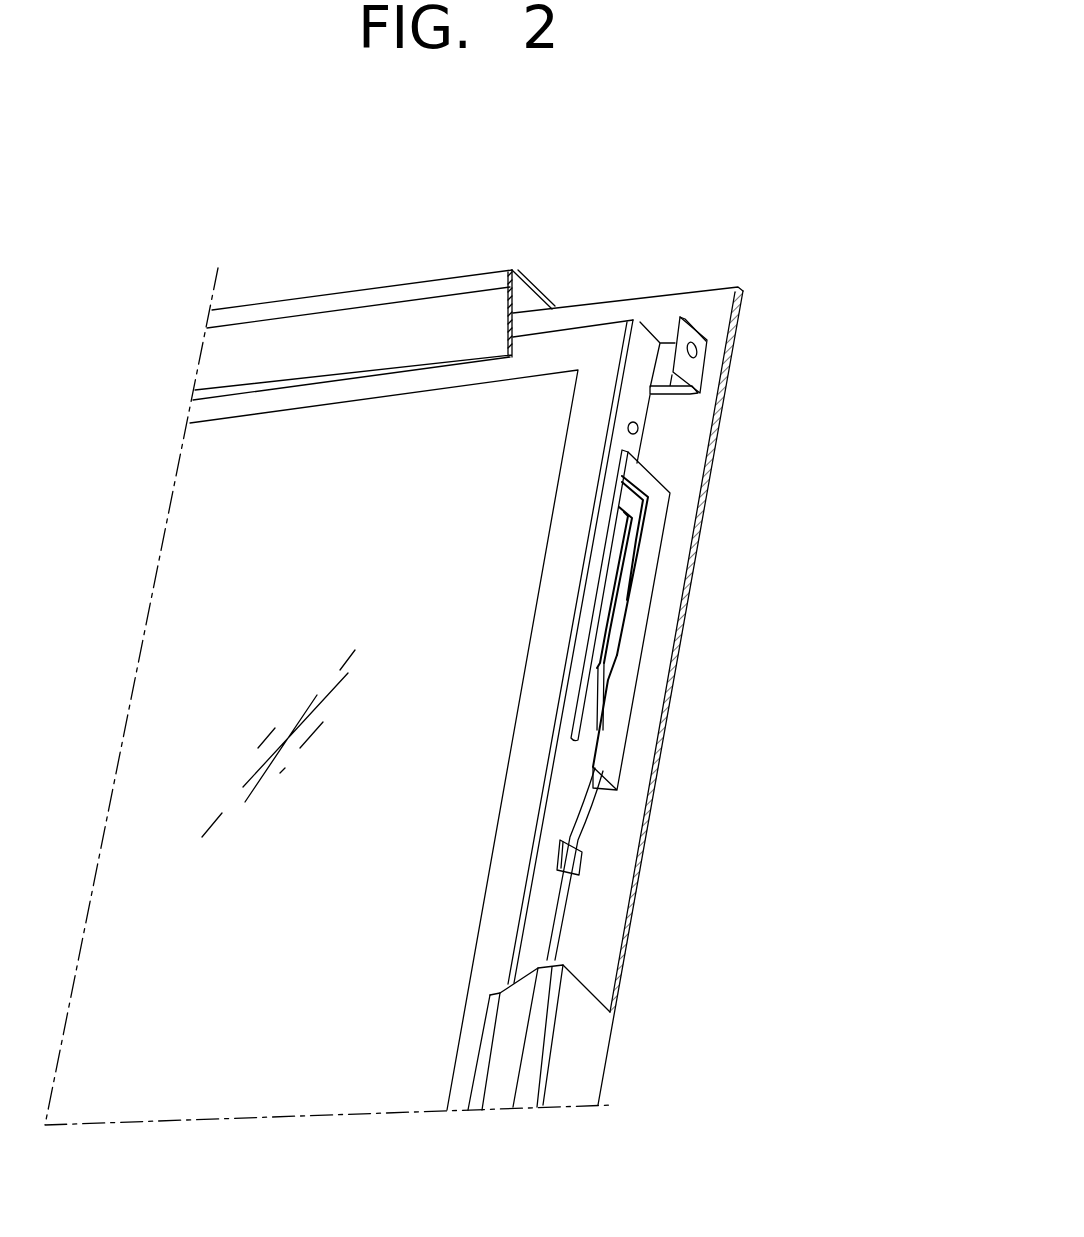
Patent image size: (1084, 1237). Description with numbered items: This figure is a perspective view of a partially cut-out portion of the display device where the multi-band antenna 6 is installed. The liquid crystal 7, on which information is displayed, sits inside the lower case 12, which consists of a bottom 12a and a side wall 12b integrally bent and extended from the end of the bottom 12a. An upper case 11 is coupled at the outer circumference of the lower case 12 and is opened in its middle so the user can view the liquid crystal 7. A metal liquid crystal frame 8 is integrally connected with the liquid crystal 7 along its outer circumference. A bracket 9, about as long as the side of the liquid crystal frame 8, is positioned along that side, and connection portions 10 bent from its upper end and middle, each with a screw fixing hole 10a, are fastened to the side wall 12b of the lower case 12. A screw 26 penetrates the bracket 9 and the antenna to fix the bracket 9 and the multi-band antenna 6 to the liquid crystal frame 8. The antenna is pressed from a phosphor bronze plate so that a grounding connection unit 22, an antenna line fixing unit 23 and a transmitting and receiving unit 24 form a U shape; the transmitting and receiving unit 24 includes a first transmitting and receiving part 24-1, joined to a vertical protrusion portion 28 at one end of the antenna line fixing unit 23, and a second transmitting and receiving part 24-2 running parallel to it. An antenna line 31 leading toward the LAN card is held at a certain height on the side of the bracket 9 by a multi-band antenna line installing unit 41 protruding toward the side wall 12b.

The multi-band antenna 6 is at (761, 590).
The liquid crystal 7 is at (547, 390).
The liquid crystal frame 8 is at (602, 337).
The bracket 9 is at (643, 337).
The connection portion 10 is at (766, 305).
The screw fixing hole 10a is at (705, 338).
The upper case 11 is at (323, 317).
The lower case 12 is at (404, 270).
The bottom 12a is at (670, 612).
The side wall 12b is at (582, 1030).
The grounding connection unit 22 is at (598, 730).
The antenna line fixing unit 23 is at (627, 655).
The transmitting and receiving unit 24 is at (774, 572).
The first transmitting and receiving part 24-1 is at (640, 527).
The second transmitting and receiving part 24-2 is at (640, 563).
The screw 26 is at (640, 425).
The vertical protrusion portion 28 is at (645, 470).
The antenna line 31 is at (583, 802).
The multi-band antenna line installing unit 41 is at (577, 845).